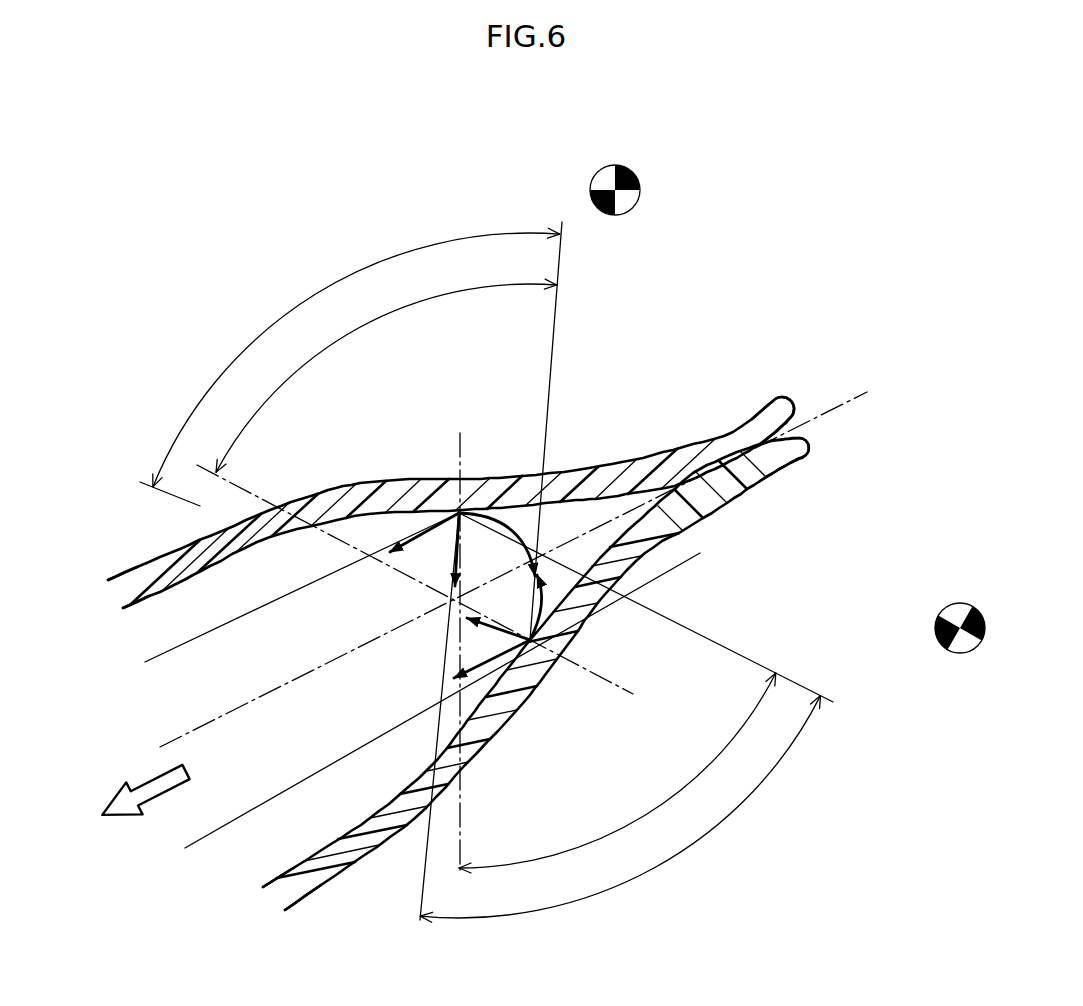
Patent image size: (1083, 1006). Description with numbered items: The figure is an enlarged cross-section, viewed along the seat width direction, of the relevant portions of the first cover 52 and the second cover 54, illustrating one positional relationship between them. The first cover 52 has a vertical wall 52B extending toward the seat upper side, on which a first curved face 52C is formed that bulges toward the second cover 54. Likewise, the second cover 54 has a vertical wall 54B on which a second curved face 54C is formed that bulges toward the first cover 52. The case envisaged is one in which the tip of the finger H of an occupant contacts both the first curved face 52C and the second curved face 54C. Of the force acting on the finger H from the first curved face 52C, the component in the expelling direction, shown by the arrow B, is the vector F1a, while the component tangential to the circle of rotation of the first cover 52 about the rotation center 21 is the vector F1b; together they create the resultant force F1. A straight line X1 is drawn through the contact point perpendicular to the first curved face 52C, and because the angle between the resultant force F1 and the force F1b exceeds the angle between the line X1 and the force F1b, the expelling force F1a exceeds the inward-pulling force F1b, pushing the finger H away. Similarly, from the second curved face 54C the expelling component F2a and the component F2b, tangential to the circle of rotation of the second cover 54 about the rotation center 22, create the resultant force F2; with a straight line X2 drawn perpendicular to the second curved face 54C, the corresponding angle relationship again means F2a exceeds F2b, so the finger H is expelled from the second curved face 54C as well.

The rotation center 21 is at (963, 654).
The rotation center 22 is at (642, 183).
The first cover 52 is at (490, 744).
The vertical wall 52B is at (342, 872).
The first curved face 52C is at (748, 489).
The second cover 54 is at (364, 481).
The vertical wall 54B is at (126, 587).
The second curved face 54C is at (726, 428).
The resultant force F1 is at (498, 618).
The force F1a is at (482, 660).
The force F1b is at (552, 606).
The resultant force F2 is at (438, 549).
The force F2a is at (403, 560).
The force F2b is at (534, 552).
The straight line X1 is at (618, 698).
The straight line X2 is at (458, 452).
The finger H is at (228, 832).
The arrow B direction B is at (145, 785).